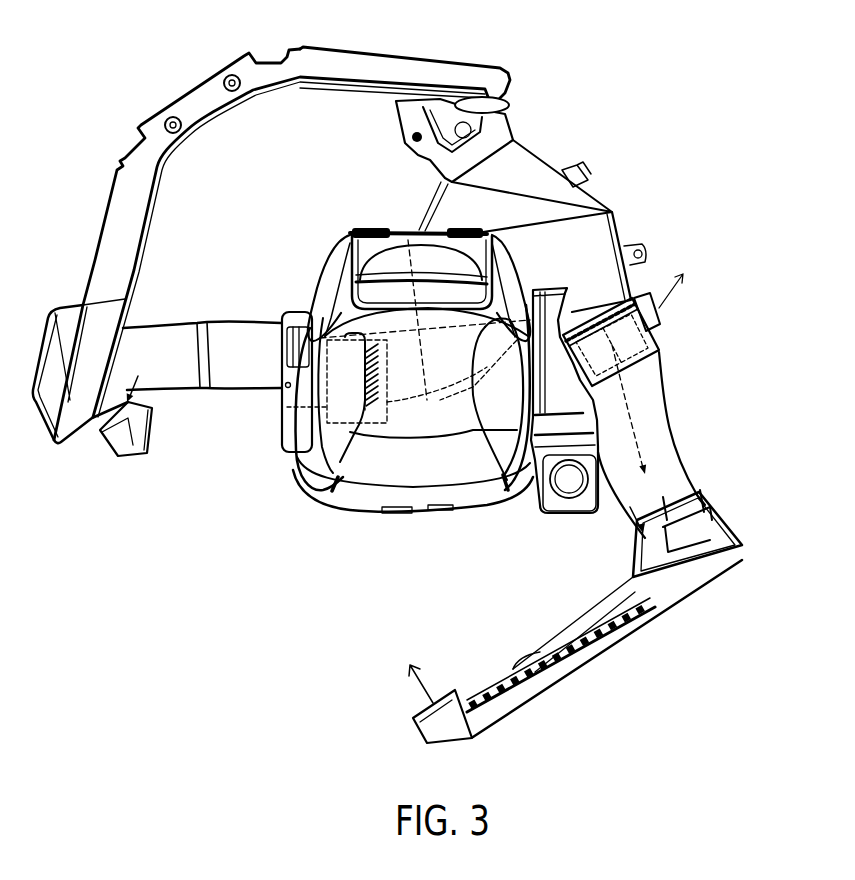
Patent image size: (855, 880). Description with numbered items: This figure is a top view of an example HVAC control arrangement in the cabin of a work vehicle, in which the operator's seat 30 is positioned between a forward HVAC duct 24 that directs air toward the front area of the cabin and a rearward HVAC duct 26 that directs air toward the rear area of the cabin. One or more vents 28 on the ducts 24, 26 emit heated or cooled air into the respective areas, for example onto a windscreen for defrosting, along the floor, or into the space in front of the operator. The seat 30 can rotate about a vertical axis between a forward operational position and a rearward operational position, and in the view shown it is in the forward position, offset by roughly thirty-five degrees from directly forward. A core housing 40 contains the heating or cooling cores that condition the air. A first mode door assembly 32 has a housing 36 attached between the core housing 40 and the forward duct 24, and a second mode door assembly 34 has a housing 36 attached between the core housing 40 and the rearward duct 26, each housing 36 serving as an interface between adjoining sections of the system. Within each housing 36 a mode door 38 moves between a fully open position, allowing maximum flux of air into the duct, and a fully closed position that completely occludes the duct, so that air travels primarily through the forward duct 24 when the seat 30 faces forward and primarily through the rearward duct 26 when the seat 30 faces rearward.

The forward HVAC duct 24 is at (680, 468).
The rearward HVAC duct 26 is at (140, 265).
The vents 28 is at (277, 44).
The seat 30 is at (310, 478).
The first mode door assembly 32 is at (667, 321).
The second mode door assembly 34 is at (328, 422).
The housing 36 is at (656, 342).
The mode door 38 is at (378, 381).
The core housing 40 is at (628, 230).